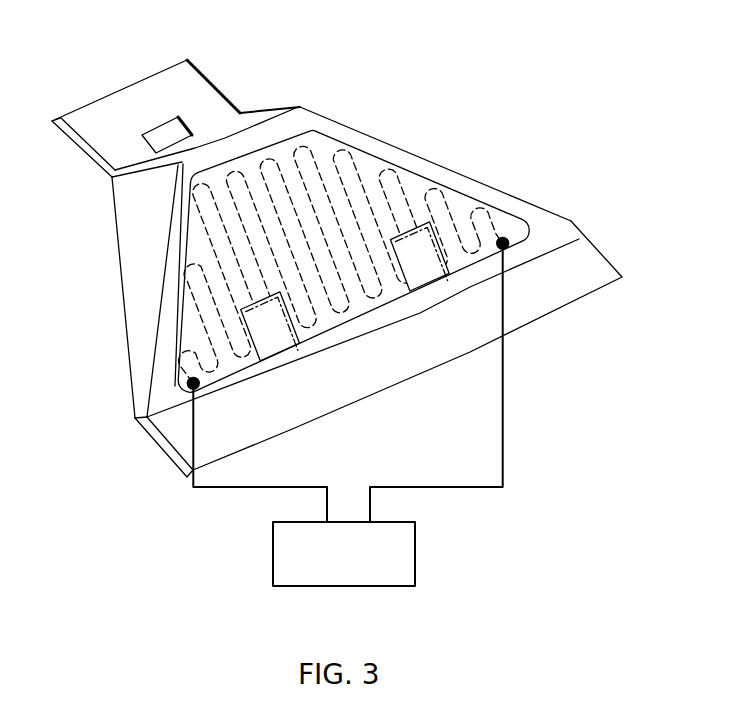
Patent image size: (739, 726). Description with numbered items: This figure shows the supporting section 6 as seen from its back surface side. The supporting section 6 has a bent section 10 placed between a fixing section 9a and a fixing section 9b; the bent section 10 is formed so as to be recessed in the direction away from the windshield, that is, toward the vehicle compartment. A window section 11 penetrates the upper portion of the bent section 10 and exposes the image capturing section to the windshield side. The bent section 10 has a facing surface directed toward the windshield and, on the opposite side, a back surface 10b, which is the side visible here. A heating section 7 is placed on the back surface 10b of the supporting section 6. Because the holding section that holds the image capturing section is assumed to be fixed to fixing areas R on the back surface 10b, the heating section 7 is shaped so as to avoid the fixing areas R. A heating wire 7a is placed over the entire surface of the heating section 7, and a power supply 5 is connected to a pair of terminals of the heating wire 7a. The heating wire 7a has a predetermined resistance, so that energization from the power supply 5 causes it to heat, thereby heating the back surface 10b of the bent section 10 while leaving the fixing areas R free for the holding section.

The power supply 5 is at (418, 550).
The supporting section 6 is at (408, 84).
The heating section 7 is at (447, 190).
The heating wire 7a is at (472, 192).
The fixing section 9a is at (152, 76).
The fixing section 9b is at (550, 301).
The bent section 10 is at (304, 106).
The back surface 10b is at (403, 160).
The window section 11 is at (213, 128).
The fixing areas R is at (298, 351).